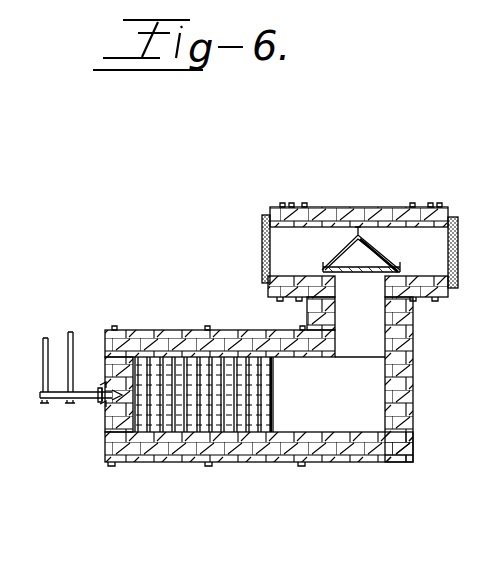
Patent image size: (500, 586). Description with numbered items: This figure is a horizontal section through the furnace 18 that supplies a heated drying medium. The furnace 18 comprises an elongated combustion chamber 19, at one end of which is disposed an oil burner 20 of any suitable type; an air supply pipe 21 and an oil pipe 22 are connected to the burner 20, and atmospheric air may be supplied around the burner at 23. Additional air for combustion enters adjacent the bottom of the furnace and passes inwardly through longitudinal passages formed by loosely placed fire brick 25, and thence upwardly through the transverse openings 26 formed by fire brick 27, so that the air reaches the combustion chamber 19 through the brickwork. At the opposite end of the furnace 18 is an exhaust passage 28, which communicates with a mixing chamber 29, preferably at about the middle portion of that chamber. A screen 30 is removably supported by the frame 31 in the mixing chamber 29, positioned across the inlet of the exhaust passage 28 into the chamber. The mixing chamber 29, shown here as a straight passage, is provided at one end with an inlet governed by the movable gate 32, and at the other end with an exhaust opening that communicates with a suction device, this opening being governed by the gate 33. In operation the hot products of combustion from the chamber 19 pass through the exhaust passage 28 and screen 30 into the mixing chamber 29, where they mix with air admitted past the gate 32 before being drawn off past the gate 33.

The furnace 18 is at (267, 466).
The combustion chamber 19 is at (334, 380).
The oil burner 20 is at (80, 400).
The air supply pipe 21 is at (73, 345).
The oil pipe 22 is at (43, 350).
The atmospheric air supply 23 is at (100, 405).
The loosely placed fire brick 25 is at (277, 418).
The transverse openings 26 is at (263, 398).
The fire brick 27 is at (168, 367).
The exhaust passage 28 is at (372, 332).
The mixing chamber 29 is at (328, 237).
The screen 30 is at (368, 266).
The frame 31 is at (378, 252).
The movable gate 32 is at (458, 250).
The gate 33 is at (262, 256).